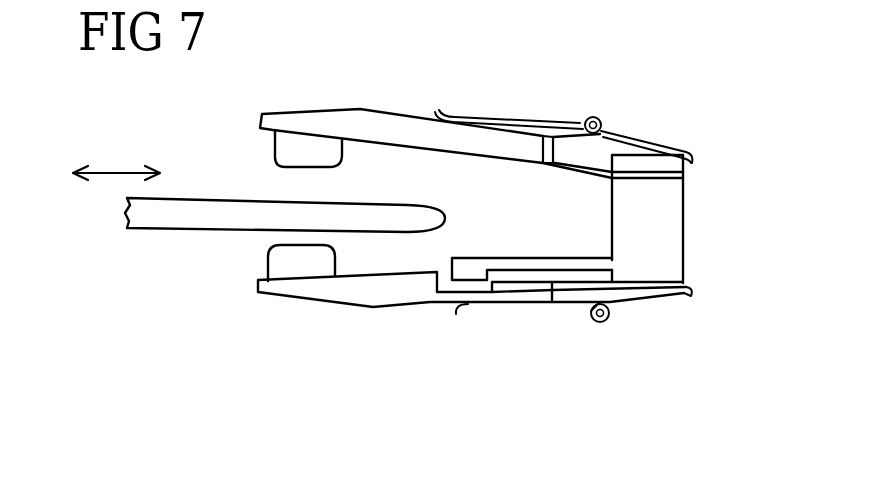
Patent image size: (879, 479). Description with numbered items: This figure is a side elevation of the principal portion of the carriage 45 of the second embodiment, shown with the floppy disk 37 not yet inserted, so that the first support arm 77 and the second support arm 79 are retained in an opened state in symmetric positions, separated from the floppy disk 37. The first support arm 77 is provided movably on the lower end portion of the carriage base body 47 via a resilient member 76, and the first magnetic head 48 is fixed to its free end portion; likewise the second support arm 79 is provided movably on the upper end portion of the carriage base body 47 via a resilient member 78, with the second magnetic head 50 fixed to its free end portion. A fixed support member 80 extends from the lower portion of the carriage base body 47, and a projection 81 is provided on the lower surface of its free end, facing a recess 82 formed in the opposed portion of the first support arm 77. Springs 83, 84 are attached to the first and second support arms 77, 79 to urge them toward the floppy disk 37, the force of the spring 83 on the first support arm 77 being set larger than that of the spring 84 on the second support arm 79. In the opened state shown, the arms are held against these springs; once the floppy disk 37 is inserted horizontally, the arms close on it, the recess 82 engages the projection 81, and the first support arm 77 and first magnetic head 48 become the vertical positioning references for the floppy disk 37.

The floppy disk 37 is at (193, 207).
The carriage 45 is at (648, 122).
The carriage base body 47 is at (668, 217).
The first magnetic head 48 is at (290, 272).
The second magnetic head 50 is at (307, 147).
The resilient member 76 is at (575, 290).
The first support arm 77 is at (385, 297).
The resilient member 78 is at (557, 160).
The second support arm 79 is at (402, 124).
The fixed support member 80 is at (515, 257).
The projection 81 is at (480, 300).
The recess 82 is at (440, 293).
The spring 83 is at (637, 293).
The spring 84 is at (643, 138).